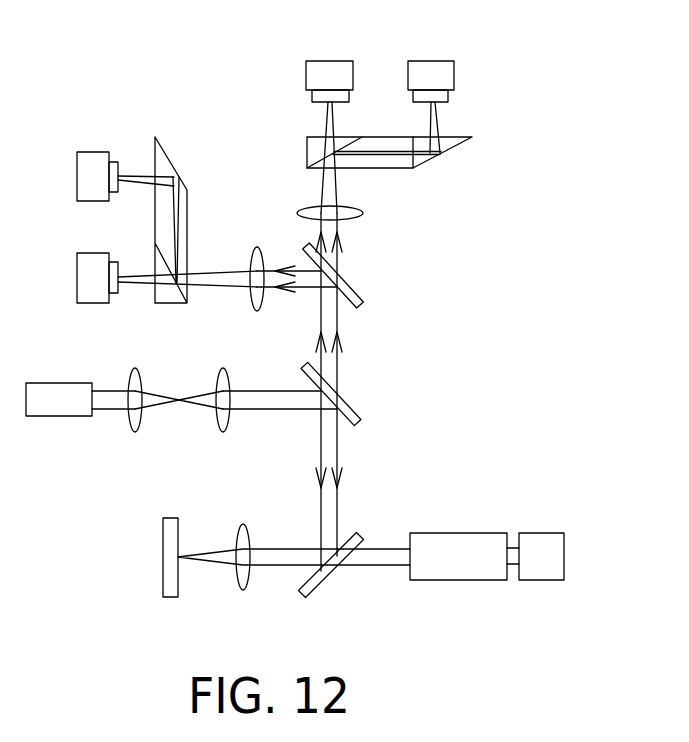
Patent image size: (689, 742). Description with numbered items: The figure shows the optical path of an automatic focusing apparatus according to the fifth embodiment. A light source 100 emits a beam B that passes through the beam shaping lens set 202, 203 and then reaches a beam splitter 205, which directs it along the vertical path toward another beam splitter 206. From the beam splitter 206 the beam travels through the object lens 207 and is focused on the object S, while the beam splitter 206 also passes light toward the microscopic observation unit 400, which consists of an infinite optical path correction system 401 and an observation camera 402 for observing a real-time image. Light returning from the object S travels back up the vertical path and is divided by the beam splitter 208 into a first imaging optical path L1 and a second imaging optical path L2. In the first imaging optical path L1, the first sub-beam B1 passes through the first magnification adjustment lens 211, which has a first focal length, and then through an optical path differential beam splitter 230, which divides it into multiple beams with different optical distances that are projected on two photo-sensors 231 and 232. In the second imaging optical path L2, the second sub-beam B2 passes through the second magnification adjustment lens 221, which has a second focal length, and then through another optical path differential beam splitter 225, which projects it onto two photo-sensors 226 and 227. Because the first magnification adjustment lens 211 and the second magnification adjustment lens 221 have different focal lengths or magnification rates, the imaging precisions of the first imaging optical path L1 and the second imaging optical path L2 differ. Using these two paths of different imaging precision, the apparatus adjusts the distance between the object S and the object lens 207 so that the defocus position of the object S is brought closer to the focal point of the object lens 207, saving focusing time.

The light source 100 is at (60, 383).
The beam shaping lens set 202 is at (131, 372).
The beam shaping lens set 203 is at (218, 372).
The beam splitter 205 is at (352, 410).
The beam splitter 206 is at (318, 587).
The object lens 207 is at (245, 590).
The beam splitter 208 is at (365, 305).
The first magnification adjustment lens 211 is at (363, 208).
The second magnification adjustment lens 221 is at (258, 247).
The optical path differential beam splitter 225 is at (165, 165).
The photo-sensor 226 is at (76, 176).
The photo-sensor 227 is at (76, 278).
The optical path differential beam splitter 230 is at (307, 155).
The photo-sensor 231 is at (305, 75).
The photo-sensor 232 is at (455, 76).
The microscopic observation unit 400 is at (493, 502).
The infinite optical path correction system 401 is at (462, 537).
The observation camera 402 is at (540, 537).
The beam B is at (342, 392).
The first sub-beam B1 is at (354, 179).
The second sub-beam B2 is at (297, 301).
The first imaging optical path L1 is at (323, 190).
The second imaging optical path L2 is at (218, 272).
The object S is at (163, 580).